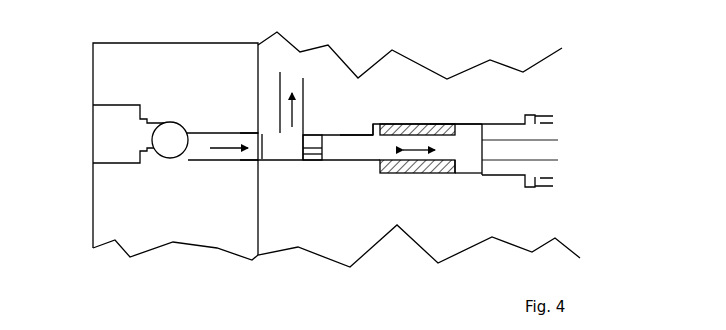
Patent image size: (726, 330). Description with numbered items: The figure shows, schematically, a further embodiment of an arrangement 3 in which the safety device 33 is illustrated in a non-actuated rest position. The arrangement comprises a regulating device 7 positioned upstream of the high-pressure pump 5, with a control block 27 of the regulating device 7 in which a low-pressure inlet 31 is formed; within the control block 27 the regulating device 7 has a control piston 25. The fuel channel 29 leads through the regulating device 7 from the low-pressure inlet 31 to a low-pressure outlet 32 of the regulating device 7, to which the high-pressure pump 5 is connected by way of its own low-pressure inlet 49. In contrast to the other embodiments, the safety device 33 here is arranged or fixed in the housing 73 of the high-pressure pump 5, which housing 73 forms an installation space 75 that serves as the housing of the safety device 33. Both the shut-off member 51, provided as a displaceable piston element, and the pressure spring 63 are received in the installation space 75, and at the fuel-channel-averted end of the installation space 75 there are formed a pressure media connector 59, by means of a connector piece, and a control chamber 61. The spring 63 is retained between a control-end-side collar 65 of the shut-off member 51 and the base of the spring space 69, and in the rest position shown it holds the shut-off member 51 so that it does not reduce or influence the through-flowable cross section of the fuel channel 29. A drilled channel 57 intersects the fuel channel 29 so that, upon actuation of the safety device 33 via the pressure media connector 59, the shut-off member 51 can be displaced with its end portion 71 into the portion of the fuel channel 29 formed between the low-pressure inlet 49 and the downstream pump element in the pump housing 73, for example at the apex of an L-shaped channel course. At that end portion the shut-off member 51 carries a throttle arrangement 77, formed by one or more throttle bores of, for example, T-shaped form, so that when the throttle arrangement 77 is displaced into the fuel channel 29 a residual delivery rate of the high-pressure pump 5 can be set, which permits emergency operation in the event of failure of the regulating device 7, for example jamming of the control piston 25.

The arrangement 3 is at (318, 30).
The high-pressure pump 5 is at (315, 232).
The regulating device 7 is at (120, 83).
The control piston 25 is at (181, 149).
The control block 27 is at (143, 226).
The fuel channel 29 is at (280, 157).
The low-pressure inlet 31 is at (128, 146).
The low-pressure outlet 32 is at (255, 158).
The safety device 33 is at (443, 117).
The low-pressure inlet of the high-pressure pump 49 is at (270, 152).
The shut-off member 51 is at (367, 142).
The drilled channel 57 is at (362, 142).
The pressure media connector 59 is at (550, 148).
The control chamber 61 is at (508, 150).
The pressure spring 63 is at (420, 175).
The control-end-side collar 65 is at (469, 125).
The spring space 69 is at (406, 126).
The end portion 71 is at (325, 158).
The housing of the high-pressure pump 73 is at (531, 229).
The installation space 75 is at (402, 177).
The throttle arrangement 77 is at (319, 135).